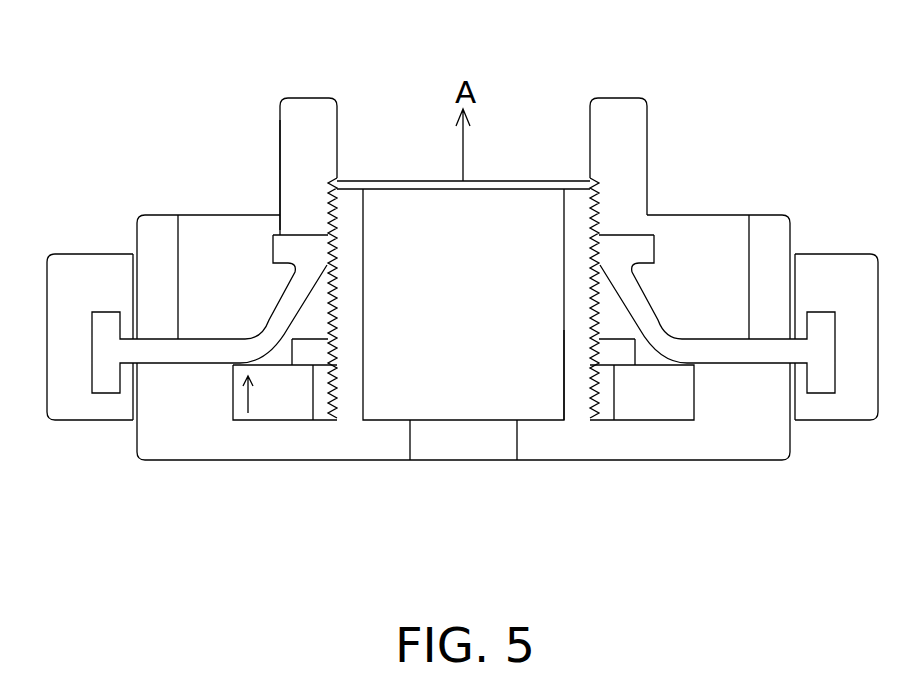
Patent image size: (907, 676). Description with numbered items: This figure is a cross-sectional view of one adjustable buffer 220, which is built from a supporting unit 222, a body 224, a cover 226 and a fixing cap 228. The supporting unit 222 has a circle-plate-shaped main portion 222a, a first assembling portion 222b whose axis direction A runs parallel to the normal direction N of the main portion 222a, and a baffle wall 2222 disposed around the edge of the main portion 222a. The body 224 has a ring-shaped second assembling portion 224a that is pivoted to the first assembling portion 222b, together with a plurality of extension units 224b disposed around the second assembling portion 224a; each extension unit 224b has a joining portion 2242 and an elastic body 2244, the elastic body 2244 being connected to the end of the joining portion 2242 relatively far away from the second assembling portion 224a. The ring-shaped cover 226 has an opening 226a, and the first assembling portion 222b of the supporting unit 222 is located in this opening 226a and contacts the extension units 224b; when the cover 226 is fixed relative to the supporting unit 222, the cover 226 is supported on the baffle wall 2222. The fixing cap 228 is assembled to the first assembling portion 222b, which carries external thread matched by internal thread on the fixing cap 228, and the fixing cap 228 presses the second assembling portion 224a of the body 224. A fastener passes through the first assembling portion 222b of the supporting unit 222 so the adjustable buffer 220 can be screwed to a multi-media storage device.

The adjustable buffer 220 is at (906, 600).
The supporting unit 222 is at (790, 537).
The main portion 222a is at (645, 448).
The first assembling portion 222b is at (575, 407).
The baffle wall 2222 is at (757, 402).
The body 224 is at (734, 224).
The second assembling portion 224a is at (642, 252).
The extension unit 224b is at (739, 248).
The joining portion 2242 is at (648, 318).
The elastic body 2244 is at (827, 267).
The cover 226 is at (158, 230).
The opening 226a is at (217, 241).
The fixing cap 228 is at (310, 115).